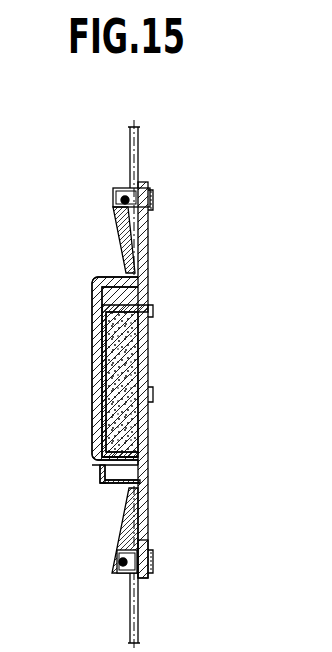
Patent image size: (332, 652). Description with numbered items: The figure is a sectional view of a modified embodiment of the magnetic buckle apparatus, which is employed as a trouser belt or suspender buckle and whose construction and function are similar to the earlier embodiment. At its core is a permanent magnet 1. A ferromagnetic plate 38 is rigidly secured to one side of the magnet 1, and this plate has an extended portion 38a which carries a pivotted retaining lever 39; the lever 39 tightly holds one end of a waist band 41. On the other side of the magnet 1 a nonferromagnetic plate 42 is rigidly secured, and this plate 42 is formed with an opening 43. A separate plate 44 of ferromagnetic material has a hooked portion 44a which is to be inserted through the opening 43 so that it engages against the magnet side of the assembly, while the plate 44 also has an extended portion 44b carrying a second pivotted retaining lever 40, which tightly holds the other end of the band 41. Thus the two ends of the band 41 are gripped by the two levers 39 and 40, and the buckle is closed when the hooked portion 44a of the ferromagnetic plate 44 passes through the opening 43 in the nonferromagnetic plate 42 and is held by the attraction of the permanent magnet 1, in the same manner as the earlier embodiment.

The permanent magnet 1 is at (128, 362).
The ferromagnetic plate 38 is at (144, 430).
The extended portion 38a is at (142, 535).
The pivotted retaining lever 39 is at (120, 533).
The pivotted retaining lever 40 is at (120, 225).
The waist band 41 is at (132, 136).
The nonferromagnetic plate 42 is at (133, 301).
The opening 43 is at (100, 466).
The separate plate 44 is at (92, 382).
The hooked portion 44a is at (140, 465).
The extended portion 44b is at (147, 232).